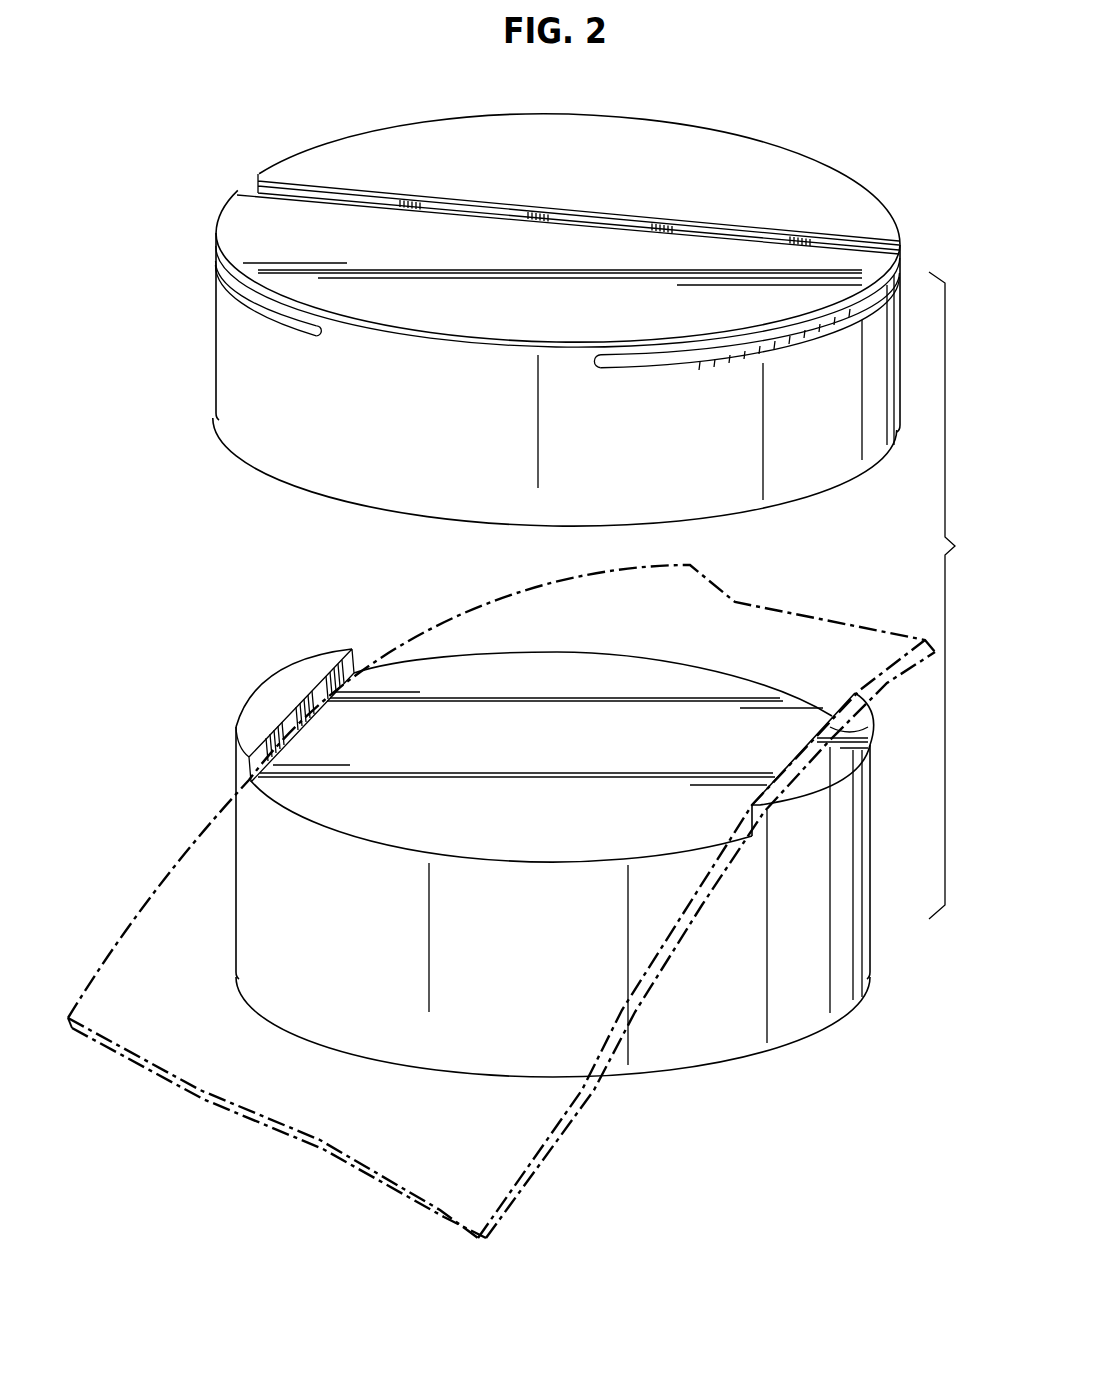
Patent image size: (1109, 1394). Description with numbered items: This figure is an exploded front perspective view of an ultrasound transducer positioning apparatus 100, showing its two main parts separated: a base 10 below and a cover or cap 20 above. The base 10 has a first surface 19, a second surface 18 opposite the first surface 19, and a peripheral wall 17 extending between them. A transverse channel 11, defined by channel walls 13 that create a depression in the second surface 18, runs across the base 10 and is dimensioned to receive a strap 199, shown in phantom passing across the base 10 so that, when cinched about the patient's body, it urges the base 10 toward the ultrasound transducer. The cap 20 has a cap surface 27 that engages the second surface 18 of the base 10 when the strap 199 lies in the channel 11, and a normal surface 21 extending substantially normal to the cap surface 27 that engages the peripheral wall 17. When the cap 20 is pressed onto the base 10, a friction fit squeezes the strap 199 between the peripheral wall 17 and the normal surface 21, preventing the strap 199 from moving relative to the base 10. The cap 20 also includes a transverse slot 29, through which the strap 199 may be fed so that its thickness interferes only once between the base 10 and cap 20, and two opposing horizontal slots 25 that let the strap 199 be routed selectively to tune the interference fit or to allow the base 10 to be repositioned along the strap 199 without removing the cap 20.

The base 10 is at (735, 1020).
The channel 11 is at (765, 650).
The channel walls 13 is at (352, 647).
The peripheral wall 17 is at (234, 763).
The second surface 18 is at (288, 680).
The first surface 19 is at (660, 1070).
The cap 20 is at (243, 426).
The normal surface 21 is at (220, 299).
The horizontal slot 25 is at (221, 275).
The cap surface 27 is at (276, 320).
The transverse slot 29 is at (762, 228).
The ultrasound transducer positioning apparatus 100 is at (957, 595).
The strap 199 is at (497, 1172).